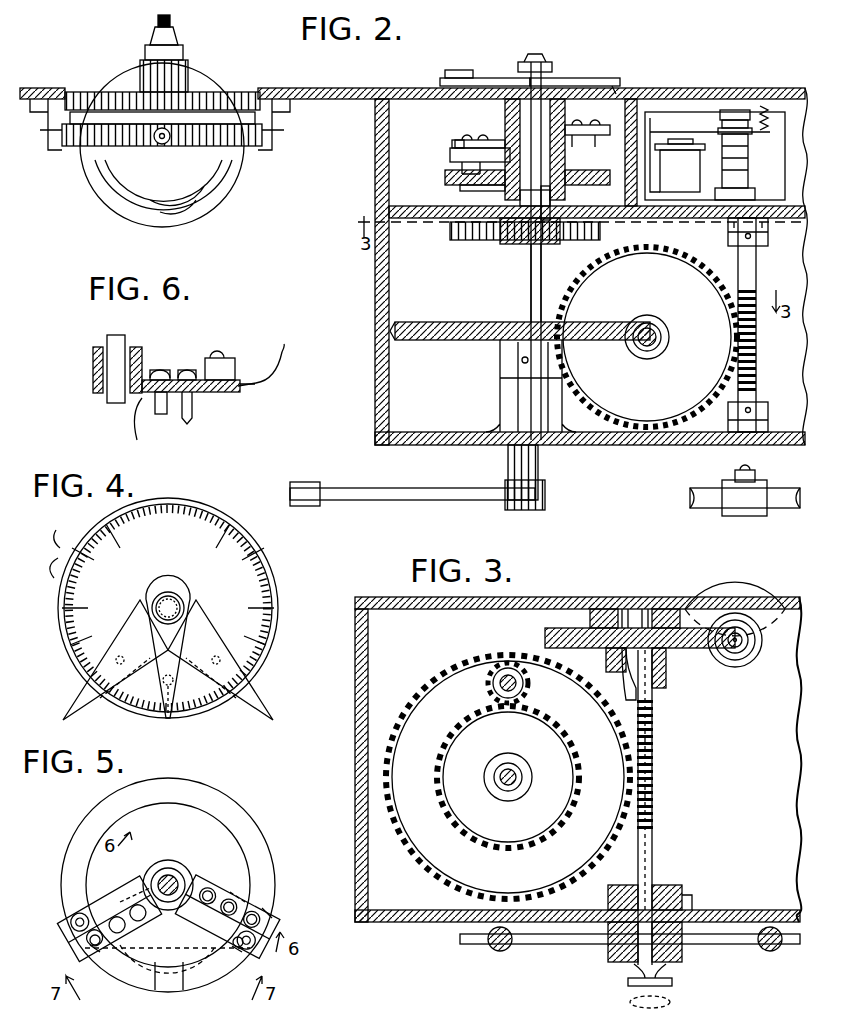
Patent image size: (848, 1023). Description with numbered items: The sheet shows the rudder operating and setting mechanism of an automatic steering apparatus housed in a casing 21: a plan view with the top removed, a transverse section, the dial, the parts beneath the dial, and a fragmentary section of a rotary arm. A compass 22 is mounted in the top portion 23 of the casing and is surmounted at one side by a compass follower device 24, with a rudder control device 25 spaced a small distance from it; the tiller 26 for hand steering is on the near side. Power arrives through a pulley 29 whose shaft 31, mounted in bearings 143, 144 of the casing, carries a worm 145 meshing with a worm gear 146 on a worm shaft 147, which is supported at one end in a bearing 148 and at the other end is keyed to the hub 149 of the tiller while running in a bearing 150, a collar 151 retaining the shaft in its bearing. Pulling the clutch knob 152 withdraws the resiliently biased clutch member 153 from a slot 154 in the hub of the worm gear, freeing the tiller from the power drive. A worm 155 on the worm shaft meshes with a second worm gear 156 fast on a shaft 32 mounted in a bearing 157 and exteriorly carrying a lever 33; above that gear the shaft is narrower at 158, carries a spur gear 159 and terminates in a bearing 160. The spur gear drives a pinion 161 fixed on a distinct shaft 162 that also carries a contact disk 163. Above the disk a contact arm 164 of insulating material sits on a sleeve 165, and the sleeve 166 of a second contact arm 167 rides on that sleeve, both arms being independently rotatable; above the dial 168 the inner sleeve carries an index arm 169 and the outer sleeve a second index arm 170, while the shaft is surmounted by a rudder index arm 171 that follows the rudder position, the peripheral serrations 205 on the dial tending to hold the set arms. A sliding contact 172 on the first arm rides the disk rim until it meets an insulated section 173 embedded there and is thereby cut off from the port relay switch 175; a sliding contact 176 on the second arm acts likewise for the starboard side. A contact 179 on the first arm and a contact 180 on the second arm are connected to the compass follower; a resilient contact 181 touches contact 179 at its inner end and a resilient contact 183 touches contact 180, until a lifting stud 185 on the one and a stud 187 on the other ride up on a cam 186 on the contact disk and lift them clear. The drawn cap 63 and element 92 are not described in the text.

In FIG. 2, the casing 21 is at (620, 453).
In FIG. 3, the casing 21 is at (579, 591).
In FIG. 2, the compass 22 is at (95, 188).
In FIG. 2, the top portion 23 is at (360, 82).
In FIG. 2, the compass follower device 24 is at (138, 52).
In FIG. 2, the rudder control device 25 is at (552, 63).
In FIG. 3, the tiller 26 is at (502, 952).
In FIG. 2, the pulley 29 is at (712, 506).
In FIG. 3, the pulley 29 is at (748, 594).
In FIG. 2, the shaft 31 is at (752, 476).
In FIG. 3, the shaft 31 is at (744, 636).
In FIG. 2, the shaft 32 is at (530, 460).
In FIG. 2, the lever 33 is at (402, 490).
In FIG. 2, the knob 63 is at (174, 58).
In FIG. 2, the coil 92 is at (666, 130).
In FIG. 2, the bearing 143 is at (766, 434).
In FIG. 2, the bearing 144 is at (758, 232).
In FIG. 2, the worm 145 is at (752, 340).
In FIG. 3, the worm 145 is at (724, 634).
In FIG. 2, the worm gear 146 is at (676, 304).
In FIG. 3, the worm gear 146 is at (548, 636).
In FIG. 2, the worm shaft 147 is at (660, 344).
In FIG. 3, the worm shaft 147 is at (652, 722).
In FIG. 3, the bearing 148 is at (612, 608).
In FIG. 3, the hub 149 is at (665, 956).
In FIG. 3, the bearing 150 is at (670, 915).
In FIG. 3, the collar 151 is at (610, 896).
In FIG. 3, the clutch knob 152 is at (670, 984).
In FIG. 3, the clutch member 153 is at (616, 662).
In FIG. 3, the slot 154 is at (632, 680).
In FIG. 2, the worm 155 is at (640, 346).
In FIG. 3, the worm 155 is at (654, 786).
In FIG. 2, the second worm gear 156 is at (430, 342).
In FIG. 3, the second worm gear 156 is at (418, 866).
In FIG. 2, the bearing 157 is at (508, 410).
In FIG. 2, the narrower portion of shaft 158 is at (528, 308).
In FIG. 3, the narrower portion of shaft 158 is at (494, 778).
In FIG. 2, the spur gear 159 is at (450, 236).
In FIG. 3, the spur gear 159 is at (486, 850).
In FIG. 2, the bearing 160 is at (518, 194).
In FIG. 2, the pinion 161 is at (519, 248).
In FIG. 3, the pinion 161 is at (522, 690).
In FIG. 2, the shaft 162 is at (547, 192).
In FIG. 6, the shaft 162 is at (116, 338).
In FIG. 5, the shaft 162 is at (174, 876).
In FIG. 3, the shaft 162 is at (498, 686).
In FIG. 2, the contact disk 163 is at (446, 180).
In FIG. 5, the contact disk 163 is at (234, 808).
In FIG. 2, the contact arm 164 is at (450, 153).
In FIG. 5, the contact arm 164 is at (90, 942).
In FIG. 2, the sleeve 165 is at (506, 124).
In FIG. 5, the sleeve 165 is at (162, 866).
In FIG. 2, the sleeve 166 is at (549, 118).
In FIG. 5, the sleeve 166 is at (186, 876).
In FIG. 2, the second contact arm 167 is at (614, 94).
In FIG. 6, the second contact arm 167 is at (240, 392).
In FIG. 5, the second contact arm 167 is at (262, 954).
In FIG. 4, the dial 168 is at (196, 512).
In FIG. 2, the index arm 169 is at (452, 78).
In FIG. 4, the index arm 169 is at (78, 700).
In FIG. 2, the second index arm 170 is at (602, 80).
In FIG. 4, the second index arm 170 is at (262, 692).
In FIG. 2, the rudder index arm 171 is at (528, 74).
In FIG. 4, the rudder index arm 171 is at (166, 720).
In FIG. 5, the sliding contact 172 is at (98, 960).
In FIG. 5, the insulated section 173 is at (173, 984).
In FIG. 2, the port relay switch 175 is at (720, 124).
In FIG. 5, the sliding contact 176 is at (236, 960).
In FIG. 5, the contact 179 is at (132, 890).
In FIG. 6, the contact 180 is at (164, 414).
In FIG. 5, the contact 180 is at (206, 894).
In FIG. 5, the resilient contact 181 is at (80, 912).
In FIG. 6, the resilient contact 183 is at (206, 366).
In FIG. 5, the resilient contact 183 is at (262, 916).
In FIG. 2, the lifting stud 185 is at (468, 195).
In FIG. 5, the cam 186 is at (168, 952).
In FIG. 6, the stud 187 is at (190, 422).
In FIG. 5, the stud 187 is at (248, 910).
In FIG. 2, the peripheral serrations 205 is at (446, 84).
In FIG. 4, the peripheral serrations 205 is at (62, 552).